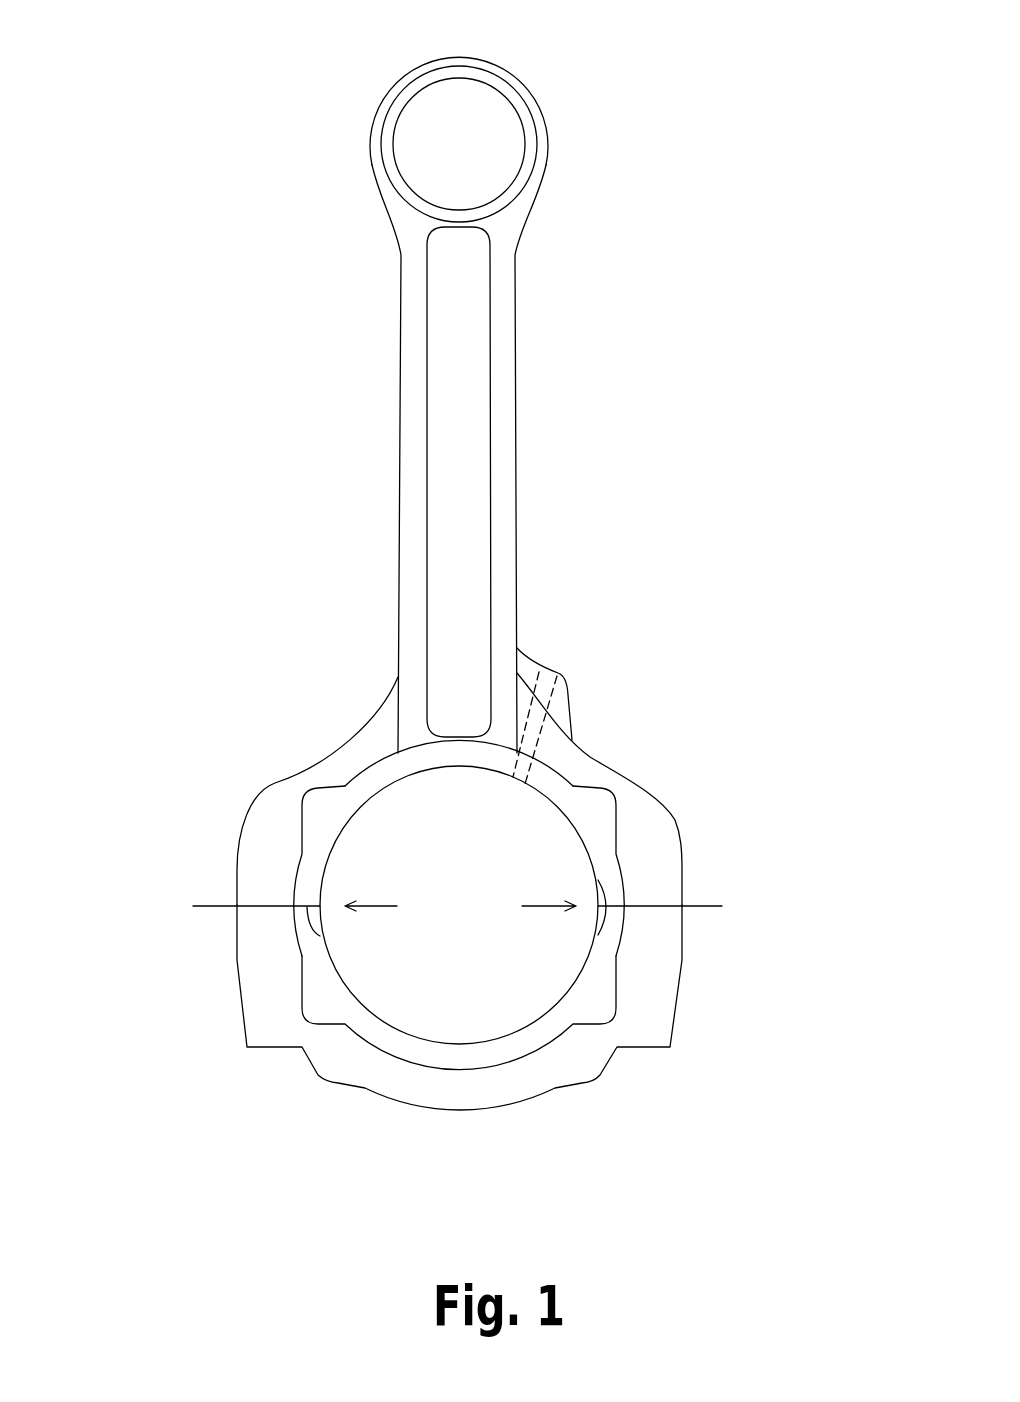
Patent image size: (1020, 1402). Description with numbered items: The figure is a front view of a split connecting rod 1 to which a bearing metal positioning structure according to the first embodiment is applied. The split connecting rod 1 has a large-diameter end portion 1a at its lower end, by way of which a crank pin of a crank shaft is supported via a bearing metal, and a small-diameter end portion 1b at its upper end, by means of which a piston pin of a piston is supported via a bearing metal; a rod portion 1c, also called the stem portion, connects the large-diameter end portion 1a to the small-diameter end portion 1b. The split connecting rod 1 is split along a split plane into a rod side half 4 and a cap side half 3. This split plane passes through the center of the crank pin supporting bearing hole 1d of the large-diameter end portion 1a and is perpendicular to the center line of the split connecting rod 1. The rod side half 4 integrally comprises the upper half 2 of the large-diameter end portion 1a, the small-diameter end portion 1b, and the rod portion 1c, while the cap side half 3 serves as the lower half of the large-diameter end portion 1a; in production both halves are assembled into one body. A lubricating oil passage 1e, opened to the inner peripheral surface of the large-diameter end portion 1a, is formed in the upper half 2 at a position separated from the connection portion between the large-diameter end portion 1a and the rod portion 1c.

The split connecting rod 1 is at (697, 118).
The large-diameter end portion 1a is at (777, 838).
The small-diameter end portion 1b is at (370, 142).
The rod portion 1c is at (517, 462).
The crank pin supporting bearing hole 1d is at (438, 772).
The lubricating oil passage 1e is at (543, 693).
The upper half of the large-diameter end portion 2 is at (682, 850).
The cap side half 3 is at (235, 953).
The rod side half 4 is at (262, 782).